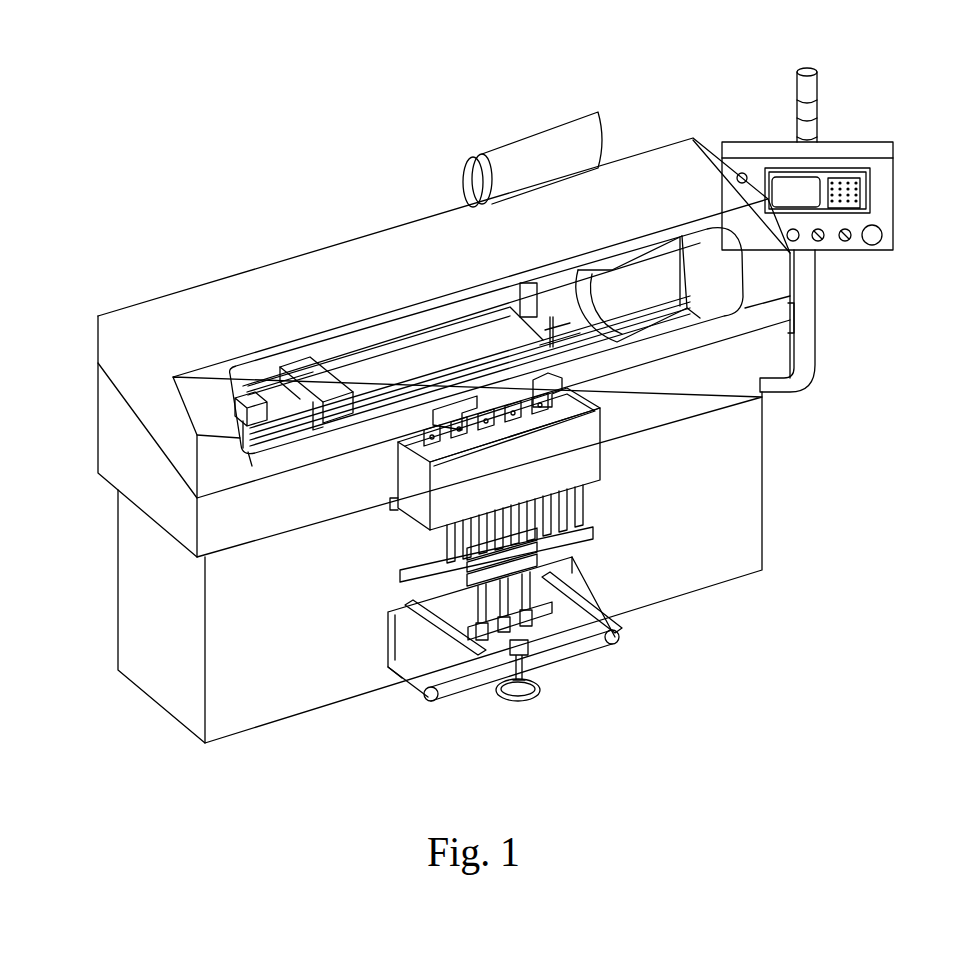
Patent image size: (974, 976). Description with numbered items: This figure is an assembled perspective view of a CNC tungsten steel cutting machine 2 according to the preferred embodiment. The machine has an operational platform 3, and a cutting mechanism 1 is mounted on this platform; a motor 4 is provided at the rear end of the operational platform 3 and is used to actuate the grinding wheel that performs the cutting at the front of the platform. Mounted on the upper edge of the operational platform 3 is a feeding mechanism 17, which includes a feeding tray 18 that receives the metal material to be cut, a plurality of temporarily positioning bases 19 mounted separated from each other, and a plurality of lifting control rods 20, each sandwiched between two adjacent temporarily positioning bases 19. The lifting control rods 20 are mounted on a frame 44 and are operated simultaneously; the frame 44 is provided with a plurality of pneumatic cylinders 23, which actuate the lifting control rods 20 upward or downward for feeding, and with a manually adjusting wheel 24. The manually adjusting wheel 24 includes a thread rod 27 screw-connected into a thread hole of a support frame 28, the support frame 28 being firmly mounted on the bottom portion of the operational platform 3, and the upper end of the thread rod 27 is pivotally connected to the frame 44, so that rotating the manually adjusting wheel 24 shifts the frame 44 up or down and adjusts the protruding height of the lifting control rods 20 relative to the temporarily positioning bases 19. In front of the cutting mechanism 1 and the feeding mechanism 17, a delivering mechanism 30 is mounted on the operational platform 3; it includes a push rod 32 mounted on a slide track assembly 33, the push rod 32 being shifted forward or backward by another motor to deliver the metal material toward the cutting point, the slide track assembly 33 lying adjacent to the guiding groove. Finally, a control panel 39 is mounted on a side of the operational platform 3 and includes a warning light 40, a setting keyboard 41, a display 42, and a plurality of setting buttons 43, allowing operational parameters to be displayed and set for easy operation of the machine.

The cutting mechanism 1 is at (595, 288).
The cutting machine 2 is at (269, 145).
The operational platform 3 is at (683, 310).
The motor 4 is at (528, 158).
The feeding mechanism 17 is at (688, 718).
The feeding tray 18 is at (583, 442).
The temporarily positioning bases 19 is at (537, 413).
The lifting control rods 20 is at (572, 507).
The pneumatic cylinders 23 is at (520, 572).
The manually adjusting wheel 24 is at (530, 688).
The thread rod 27 is at (580, 605).
The support frame 28 is at (597, 643).
The delivering mechanism 30 is at (352, 352).
The push rod 32 is at (310, 375).
The slide track assembly 33 is at (383, 363).
The control panel 39 is at (868, 147).
The warning light 40 is at (800, 88).
The setting keyboard 41 is at (857, 190).
The display 42 is at (788, 190).
The setting buttons 43 is at (872, 237).
The frame 44 is at (553, 532).